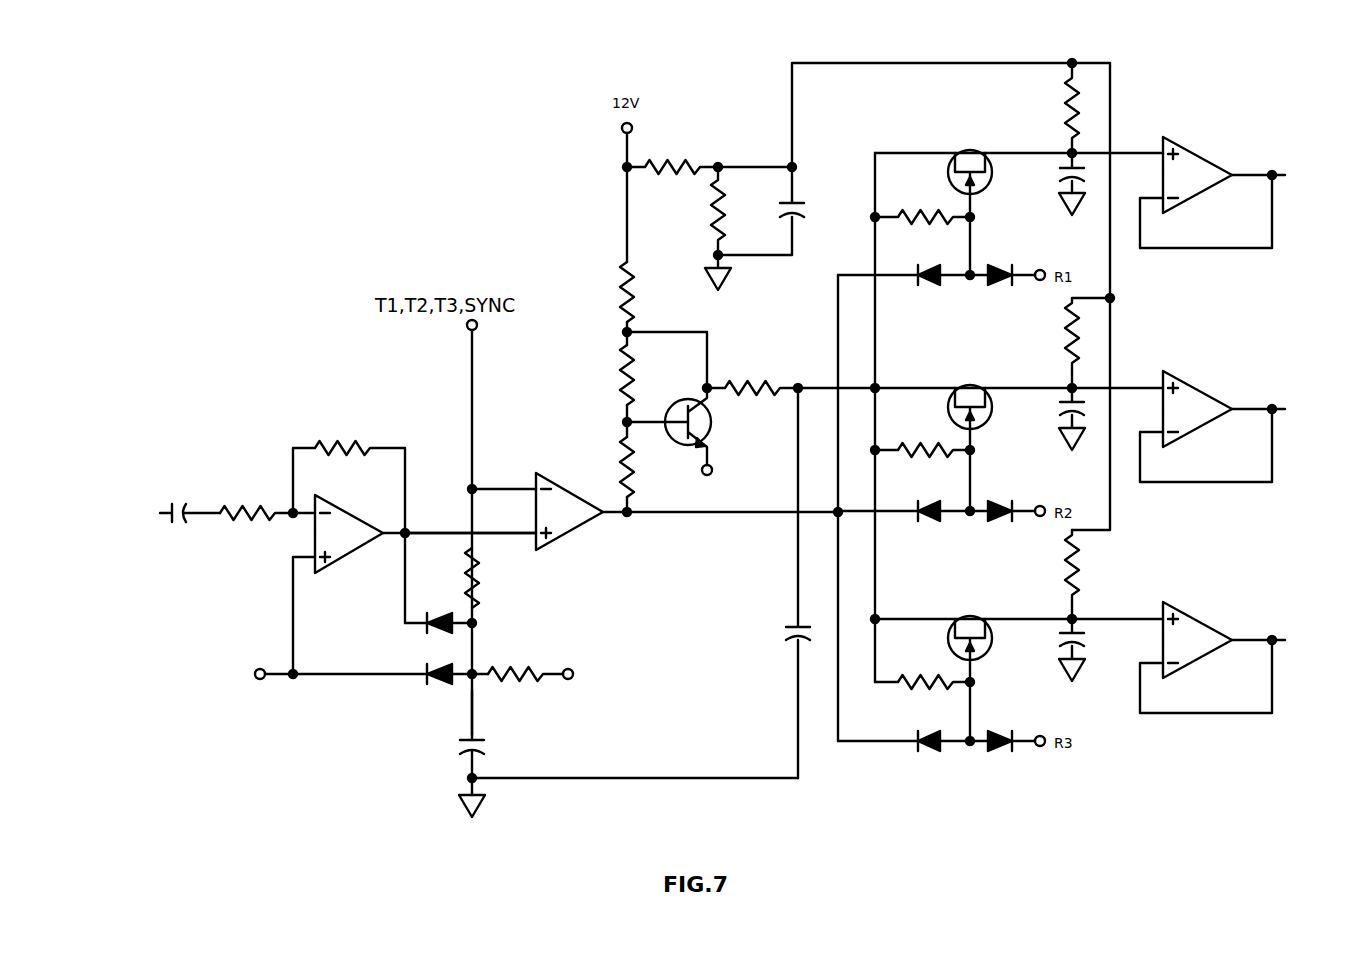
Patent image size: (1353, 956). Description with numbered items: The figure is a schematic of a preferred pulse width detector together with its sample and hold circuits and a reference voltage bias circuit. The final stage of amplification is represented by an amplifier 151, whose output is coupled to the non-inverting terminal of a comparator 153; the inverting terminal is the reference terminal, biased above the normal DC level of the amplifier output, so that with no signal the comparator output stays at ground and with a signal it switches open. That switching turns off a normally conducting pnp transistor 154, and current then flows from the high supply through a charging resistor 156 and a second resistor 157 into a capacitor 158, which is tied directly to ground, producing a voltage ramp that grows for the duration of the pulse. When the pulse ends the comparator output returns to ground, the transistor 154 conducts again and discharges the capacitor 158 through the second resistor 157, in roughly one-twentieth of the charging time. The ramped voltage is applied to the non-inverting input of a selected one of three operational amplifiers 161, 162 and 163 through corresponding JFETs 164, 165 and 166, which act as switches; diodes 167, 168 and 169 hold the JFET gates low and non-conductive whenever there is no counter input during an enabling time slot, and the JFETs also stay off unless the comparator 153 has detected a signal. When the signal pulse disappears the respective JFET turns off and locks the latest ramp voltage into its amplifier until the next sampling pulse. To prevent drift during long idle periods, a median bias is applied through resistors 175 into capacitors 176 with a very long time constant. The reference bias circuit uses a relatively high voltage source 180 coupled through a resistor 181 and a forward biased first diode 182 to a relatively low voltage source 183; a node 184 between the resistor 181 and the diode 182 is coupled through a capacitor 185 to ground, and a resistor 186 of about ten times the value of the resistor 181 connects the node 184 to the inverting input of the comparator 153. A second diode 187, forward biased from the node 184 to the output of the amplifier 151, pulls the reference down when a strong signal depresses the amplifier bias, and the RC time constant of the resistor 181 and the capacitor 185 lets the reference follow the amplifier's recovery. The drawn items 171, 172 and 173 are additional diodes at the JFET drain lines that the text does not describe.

The amplifier 151 is at (375, 548).
The comparator 153 is at (572, 540).
The pnp transistor 154 is at (715, 428).
The charging resistor 156 is at (620, 302).
The second resistor 157 is at (742, 380).
The capacitor 158 is at (788, 648).
The operational amplifier 161 is at (1200, 162).
The operational amplifier 162 is at (1200, 394).
The operational amplifier 163 is at (1200, 625).
The JFET 164 is at (995, 175).
The JFET 165 is at (995, 410).
The JFET 166 is at (995, 642).
The diode 167 is at (990, 292).
The diode 168 is at (990, 527).
The diode 169 is at (992, 757).
The diode 171 is at (925, 292).
The diode 172 is at (925, 527).
The diode 173 is at (920, 757).
The resistor 175 is at (1076, 112).
The capacitor 176 is at (1085, 172).
The high voltage source 180 is at (572, 682).
The resistor 181 is at (510, 682).
The first diode 182 is at (440, 690).
The low voltage source 183 is at (260, 683).
The node 184 is at (478, 700).
The capacitor 185 is at (460, 752).
The resistor 186 is at (480, 585).
The second diode 187 is at (440, 635).